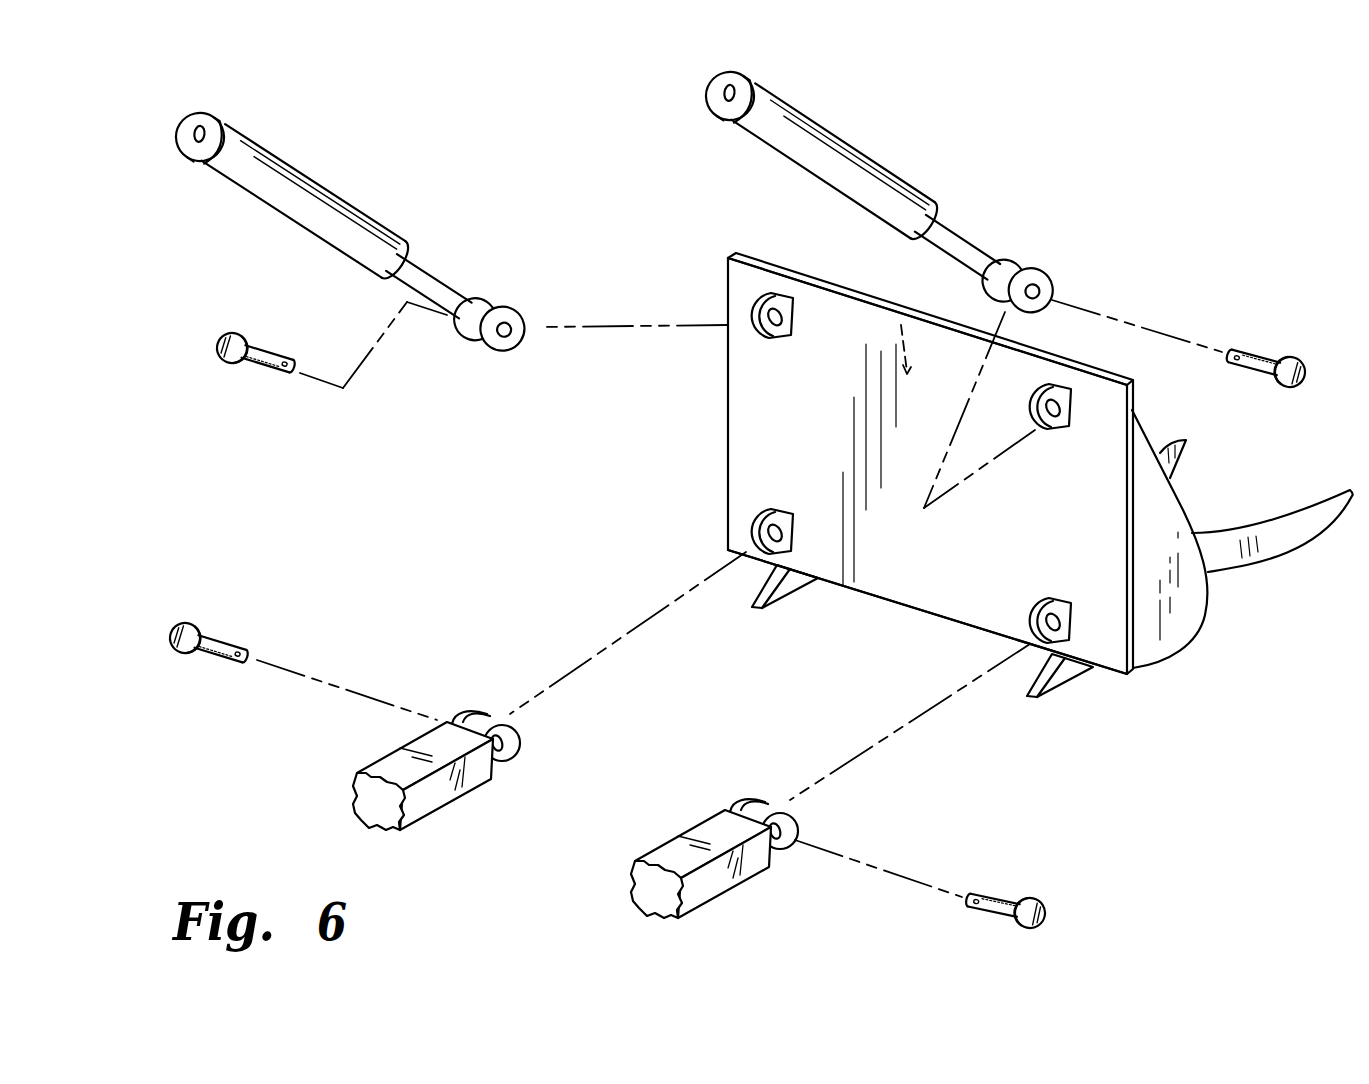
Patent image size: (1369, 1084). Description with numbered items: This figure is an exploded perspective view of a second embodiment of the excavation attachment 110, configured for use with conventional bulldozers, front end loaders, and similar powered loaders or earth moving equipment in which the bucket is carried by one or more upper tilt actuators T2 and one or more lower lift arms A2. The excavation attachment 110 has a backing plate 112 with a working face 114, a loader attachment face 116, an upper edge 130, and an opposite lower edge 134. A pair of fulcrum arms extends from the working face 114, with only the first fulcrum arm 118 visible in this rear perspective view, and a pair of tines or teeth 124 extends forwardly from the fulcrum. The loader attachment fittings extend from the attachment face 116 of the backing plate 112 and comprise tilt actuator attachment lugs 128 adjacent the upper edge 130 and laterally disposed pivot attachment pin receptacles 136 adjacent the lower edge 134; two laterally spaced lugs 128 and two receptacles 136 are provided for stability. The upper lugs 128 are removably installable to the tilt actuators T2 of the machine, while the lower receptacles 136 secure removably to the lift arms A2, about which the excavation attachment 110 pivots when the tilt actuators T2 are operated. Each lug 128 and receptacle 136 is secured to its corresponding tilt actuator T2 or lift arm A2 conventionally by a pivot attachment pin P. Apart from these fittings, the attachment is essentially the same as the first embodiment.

The excavation attachment 110 is at (980, 529).
The backing plate 112 is at (870, 463).
The working face 114 is at (900, 312).
The loader attachment face 116 is at (926, 571).
The first fulcrum arm 118 is at (1196, 548).
The tines or teeth 124 is at (1256, 506).
The tilt actuator attachment lug 128 is at (917, 397).
The upper edge 130 is at (927, 292).
The lower edge 134 is at (927, 621).
The pivot attachment pin receptacle 136 is at (858, 575).
The tilt actuator T2 is at (710, 118).
The lower lift arm A2 is at (575, 814).
The pivot attachment pin P is at (737, 600).